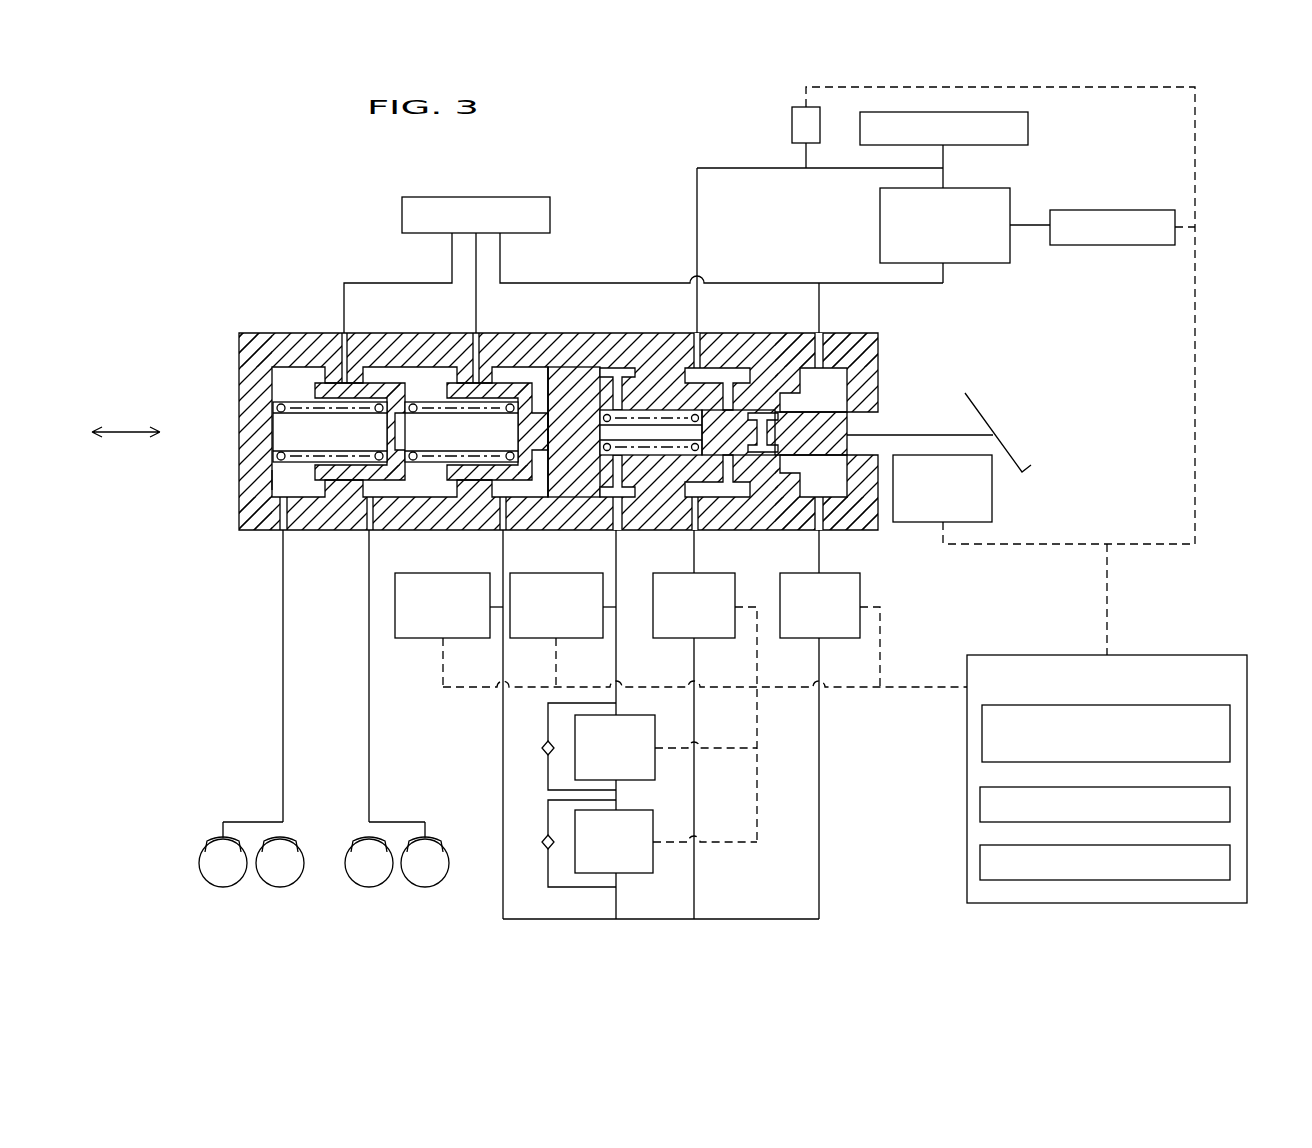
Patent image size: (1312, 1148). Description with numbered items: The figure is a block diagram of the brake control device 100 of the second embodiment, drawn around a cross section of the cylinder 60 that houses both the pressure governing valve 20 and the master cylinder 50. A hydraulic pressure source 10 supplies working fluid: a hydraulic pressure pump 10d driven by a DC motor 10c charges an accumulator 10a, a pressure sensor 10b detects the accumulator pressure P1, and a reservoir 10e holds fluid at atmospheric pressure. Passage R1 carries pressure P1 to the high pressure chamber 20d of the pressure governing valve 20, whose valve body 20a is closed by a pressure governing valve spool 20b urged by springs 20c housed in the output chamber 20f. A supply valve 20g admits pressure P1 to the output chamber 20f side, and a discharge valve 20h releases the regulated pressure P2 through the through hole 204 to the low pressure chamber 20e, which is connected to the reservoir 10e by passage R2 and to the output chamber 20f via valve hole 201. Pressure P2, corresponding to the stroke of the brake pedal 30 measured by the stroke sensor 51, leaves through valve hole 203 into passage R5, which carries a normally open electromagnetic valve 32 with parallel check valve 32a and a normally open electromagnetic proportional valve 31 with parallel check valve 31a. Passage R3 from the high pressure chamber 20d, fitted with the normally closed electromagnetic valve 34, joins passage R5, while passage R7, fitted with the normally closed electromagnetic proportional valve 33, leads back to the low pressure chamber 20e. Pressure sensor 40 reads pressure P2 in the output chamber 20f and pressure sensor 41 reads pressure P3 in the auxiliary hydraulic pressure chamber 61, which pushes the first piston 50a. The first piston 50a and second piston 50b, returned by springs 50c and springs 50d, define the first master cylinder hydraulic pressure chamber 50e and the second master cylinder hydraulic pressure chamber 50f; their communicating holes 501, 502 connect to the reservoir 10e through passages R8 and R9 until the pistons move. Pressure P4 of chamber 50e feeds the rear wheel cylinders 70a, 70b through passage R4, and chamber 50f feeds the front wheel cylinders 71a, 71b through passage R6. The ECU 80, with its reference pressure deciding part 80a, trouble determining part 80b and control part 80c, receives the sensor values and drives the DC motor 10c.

The brake control device 100 is at (335, 207).
The hydraulic pressure source 10 is at (1074, 184).
The accumulator 10a is at (1028, 128).
The pressure sensor 10b is at (792, 125).
The DC motor 10c is at (1112, 245).
The hydraulic pressure pump 10d is at (975, 263).
The reservoir 10e is at (470, 197).
The pressure governing valve 20 is at (658, 278).
The valve body 20a is at (800, 497).
The pressure governing valve spool 20b is at (825, 432).
The springs 20c is at (630, 360).
The high pressure chamber 20d is at (735, 410).
The low pressure chamber 20e is at (836, 376).
The output chamber 20f is at (683, 333).
The supply valve 20g is at (724, 405).
The discharge valve 20h is at (832, 392).
The valve hole 201 is at (800, 350).
The valve hole 203 is at (612, 478).
The through hole 204 is at (758, 475).
The brake pedal 30 is at (1010, 444).
The electromagnetic proportional valve 31 is at (653, 830).
The check valve 31a is at (548, 848).
The electromagnetic valve 32 is at (655, 736).
The check valve 32a is at (548, 754).
The electromagnetic proportional valve 33 is at (830, 640).
The electromagnetic valve 34 is at (700, 640).
The pressure sensor 40 is at (558, 640).
The pressure sensor 41 is at (447, 640).
The master cylinder 50 is at (215, 416).
The first piston 50a is at (548, 395).
The second piston 50b is at (360, 490).
The springs 50c is at (393, 382).
The springs 50d is at (250, 380).
The first master cylinder hydraulic pressure chamber 50e is at (440, 495).
The second master cylinder hydraulic pressure chamber 50f is at (272, 478).
The stroke sensor 51 is at (995, 503).
The cylinder 60 is at (287, 333).
The auxiliary hydraulic pressure chamber 61 is at (508, 385).
The communicating hole 501 is at (474, 385).
The communicating hole 502 is at (345, 385).
The wheel cylinder 70a is at (360, 838).
The wheel cylinder 70b is at (438, 838).
The wheel cylinder 71a is at (213, 838).
The wheel cylinder 71b is at (290, 838).
The ECU 80 is at (1160, 655).
The reference pressure deciding part 80a is at (1230, 733).
The trouble determining part 80b is at (1230, 806).
The control part 80c is at (1230, 863).
The hydraulic pressure passage R1 is at (830, 168).
The hydraulic pressure passage R2 is at (860, 285).
The hydraulic pressure passage R3 is at (695, 758).
The hydraulic pressure passage R4 is at (371, 758).
The hydraulic pressure passage R5 is at (618, 671).
The hydraulic pressure passage R6 is at (281, 736).
The hydraulic pressure passage R7 is at (822, 783).
The hydraulic pressure passage R8 is at (478, 283).
The hydraulic pressure passage R9 is at (452, 276).
The hydraulic pressure P1 is at (710, 250).
The hydraulic pressure P2 is at (630, 622).
The hydraulic pressure P3 is at (512, 724).
The hydraulic pressure P4 is at (341, 676).